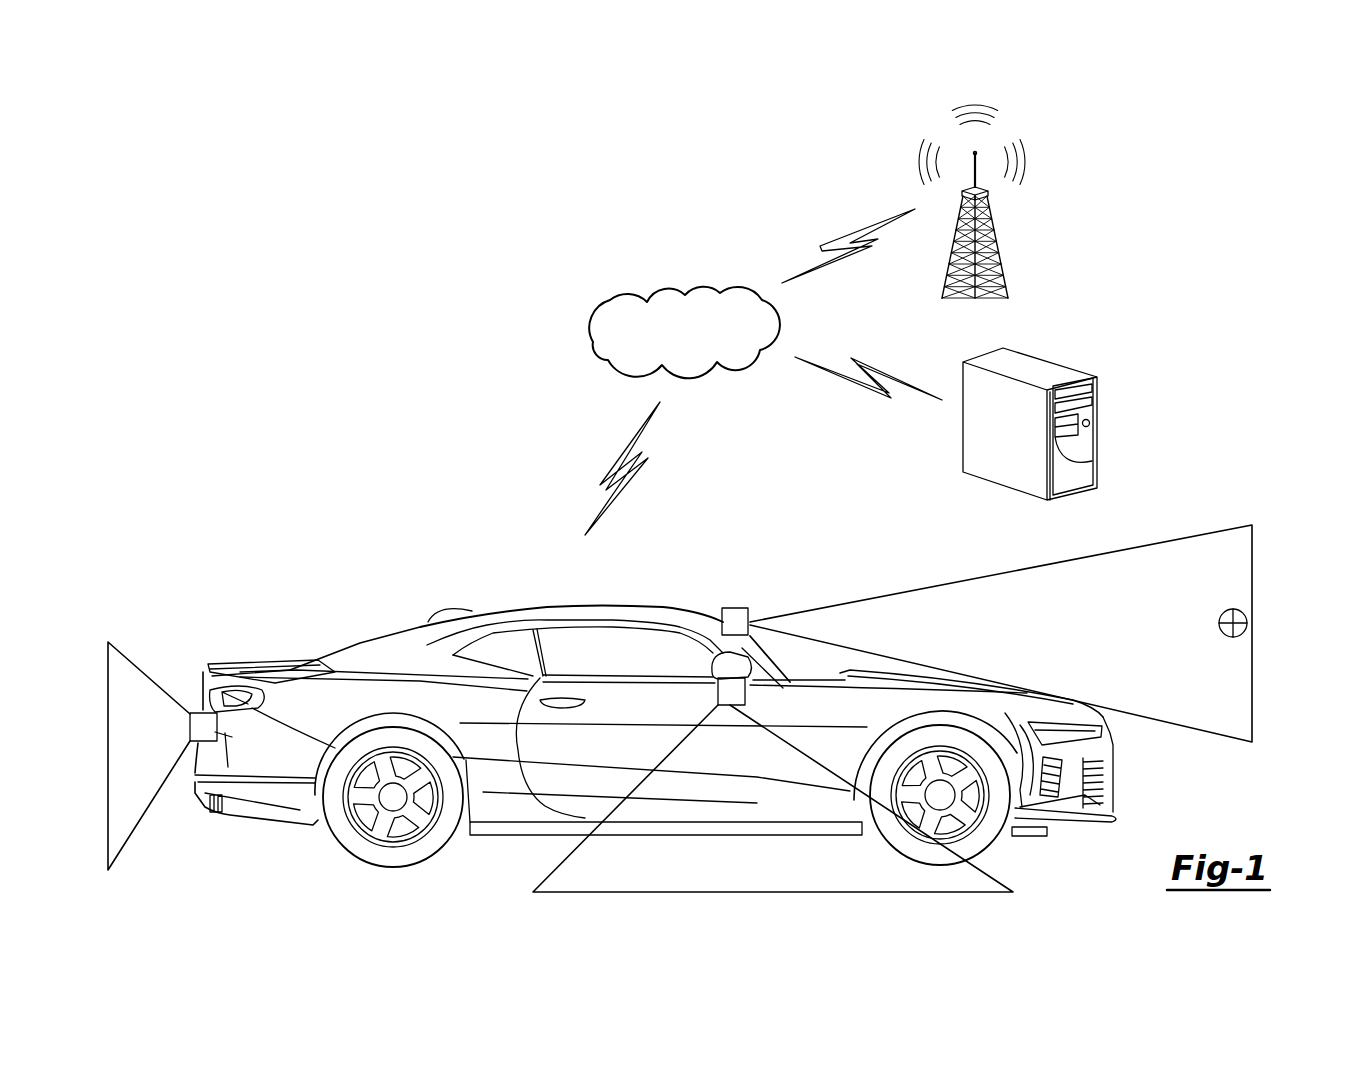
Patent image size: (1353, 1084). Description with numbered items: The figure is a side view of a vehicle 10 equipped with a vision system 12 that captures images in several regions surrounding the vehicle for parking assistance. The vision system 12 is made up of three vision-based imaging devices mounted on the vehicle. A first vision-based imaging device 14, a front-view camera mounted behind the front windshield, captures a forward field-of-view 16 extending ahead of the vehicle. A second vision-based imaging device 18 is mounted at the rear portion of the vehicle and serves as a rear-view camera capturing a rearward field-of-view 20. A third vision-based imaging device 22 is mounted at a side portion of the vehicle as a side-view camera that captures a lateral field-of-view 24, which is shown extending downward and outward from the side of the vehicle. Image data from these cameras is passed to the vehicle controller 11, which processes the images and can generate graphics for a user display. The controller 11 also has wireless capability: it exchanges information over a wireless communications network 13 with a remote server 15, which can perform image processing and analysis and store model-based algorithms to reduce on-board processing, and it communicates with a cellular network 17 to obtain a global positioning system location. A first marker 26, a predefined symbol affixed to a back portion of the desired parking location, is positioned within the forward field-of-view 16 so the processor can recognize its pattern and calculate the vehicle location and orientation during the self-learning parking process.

The vehicle 10 is at (655, 737).
The vehicle controller 11 is at (851, 716).
The vision system 12 is at (532, 580).
The wireless communications network 13 is at (614, 296).
The first vision-based imaging device 14 is at (742, 608).
The remote server 15 is at (1053, 360).
The forward field-of-view 16 is at (963, 580).
The cellular network 17 is at (1028, 167).
The second vision-based imaging device 18 is at (195, 713).
The rearward field-of-view 20 is at (136, 655).
The third vision-based imaging device 22 is at (718, 690).
The lateral field-of-view 24 is at (547, 873).
The first marker 26 is at (1247, 632).